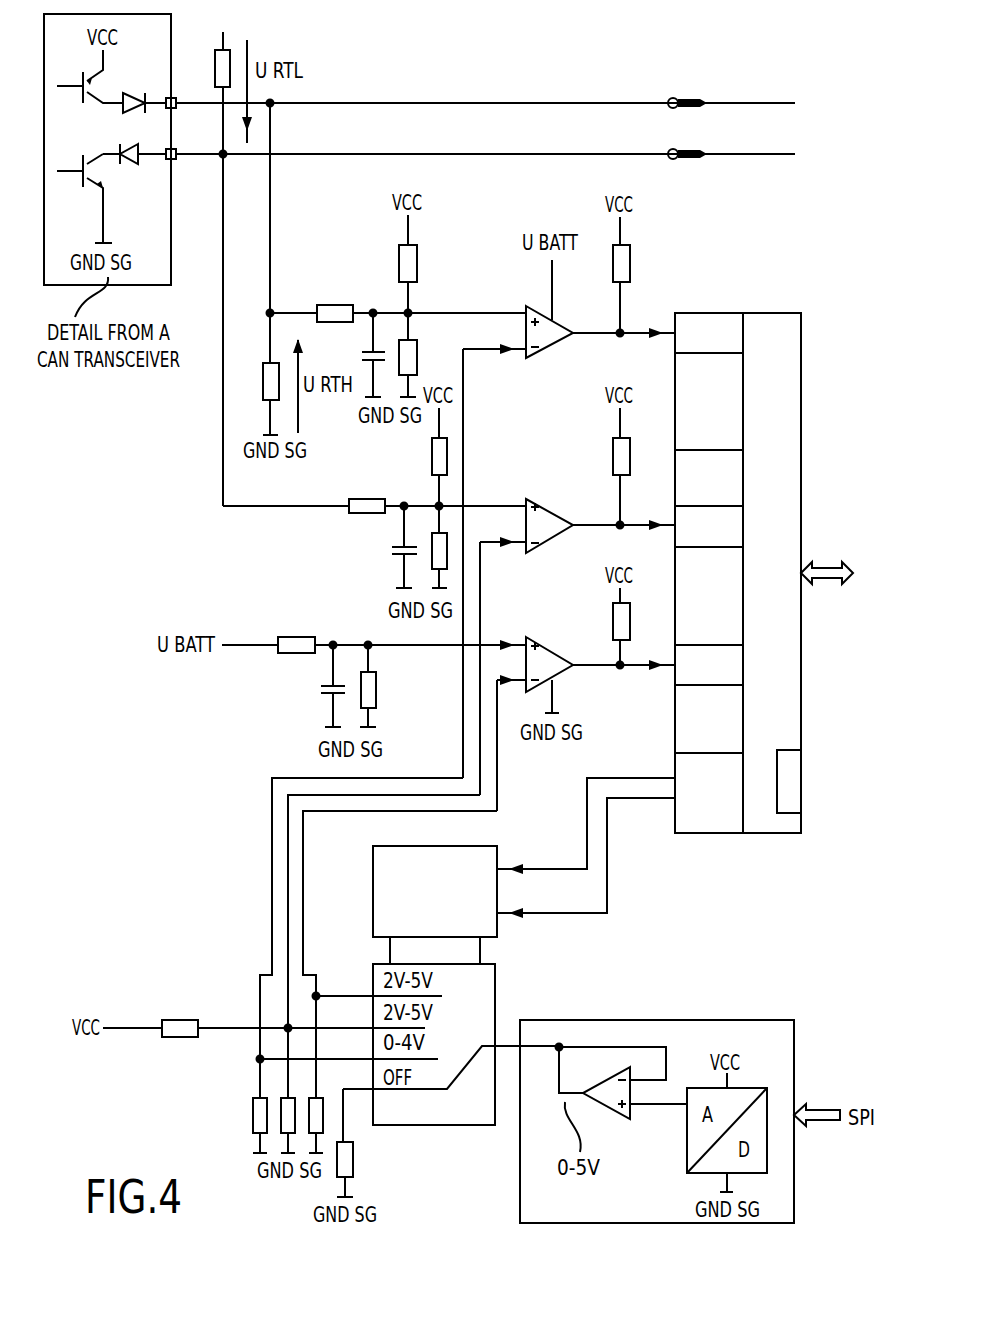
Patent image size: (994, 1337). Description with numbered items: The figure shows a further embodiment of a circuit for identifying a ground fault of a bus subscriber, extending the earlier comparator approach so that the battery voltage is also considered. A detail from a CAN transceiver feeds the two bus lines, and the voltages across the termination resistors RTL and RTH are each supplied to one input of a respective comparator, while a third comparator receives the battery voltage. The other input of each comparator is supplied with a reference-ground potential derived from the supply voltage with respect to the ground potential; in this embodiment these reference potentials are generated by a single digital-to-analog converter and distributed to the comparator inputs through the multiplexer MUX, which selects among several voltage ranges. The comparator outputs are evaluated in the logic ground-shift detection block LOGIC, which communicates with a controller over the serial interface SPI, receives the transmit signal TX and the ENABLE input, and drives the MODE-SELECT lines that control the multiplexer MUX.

The termination resistor RTL is at (205, 257).
The termination resistor RTH is at (253, 399).
The logic ground-shift detection block LOGIC is at (767, 338).
The SPI interface SPI is at (841, 574).
The TX input TX is at (801, 782).
The enable input ENABLE is at (790, 805).
The mode select output MODE-SELECT is at (705, 822).
The multiplexer MUX is at (435, 891).